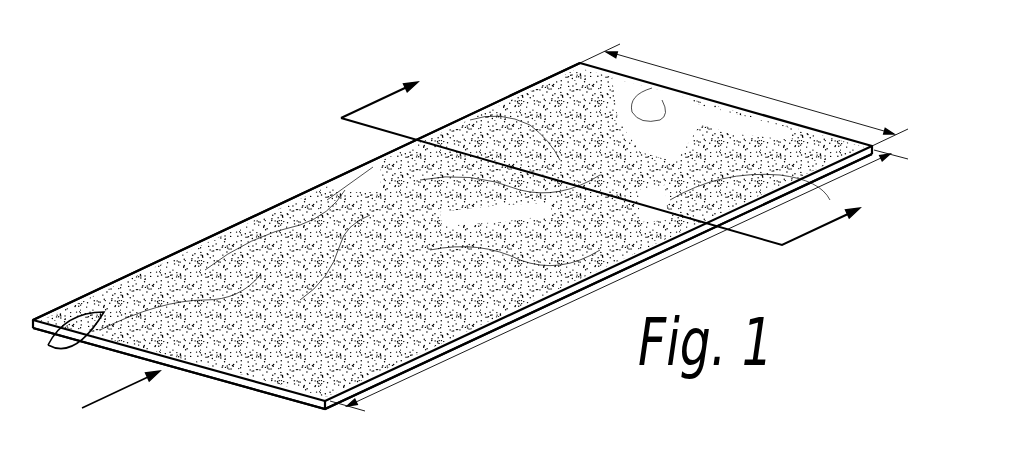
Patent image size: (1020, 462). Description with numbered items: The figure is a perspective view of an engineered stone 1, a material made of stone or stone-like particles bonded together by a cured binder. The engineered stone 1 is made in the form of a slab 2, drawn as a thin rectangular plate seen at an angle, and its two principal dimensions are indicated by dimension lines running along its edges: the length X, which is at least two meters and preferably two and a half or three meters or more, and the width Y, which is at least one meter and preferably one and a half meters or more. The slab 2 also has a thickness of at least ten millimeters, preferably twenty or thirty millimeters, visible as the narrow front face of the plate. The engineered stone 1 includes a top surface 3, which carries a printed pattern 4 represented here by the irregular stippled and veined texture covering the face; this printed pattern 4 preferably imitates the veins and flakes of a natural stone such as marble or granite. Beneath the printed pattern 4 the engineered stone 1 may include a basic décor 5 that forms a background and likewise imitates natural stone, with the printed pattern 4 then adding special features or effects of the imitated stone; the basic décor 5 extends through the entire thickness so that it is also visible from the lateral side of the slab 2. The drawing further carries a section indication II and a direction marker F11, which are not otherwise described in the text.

The engineered stone 1 is at (116, 172).
The slab 2 is at (328, 182).
The top surface 3 is at (258, 214).
The printed pattern 4 is at (68, 341).
The basic décor 5 is at (318, 377).
The direction of force F11 is at (124, 387).
The section line II- II is at (600, 164).
The length X is at (532, 321).
The width Y is at (776, 100).